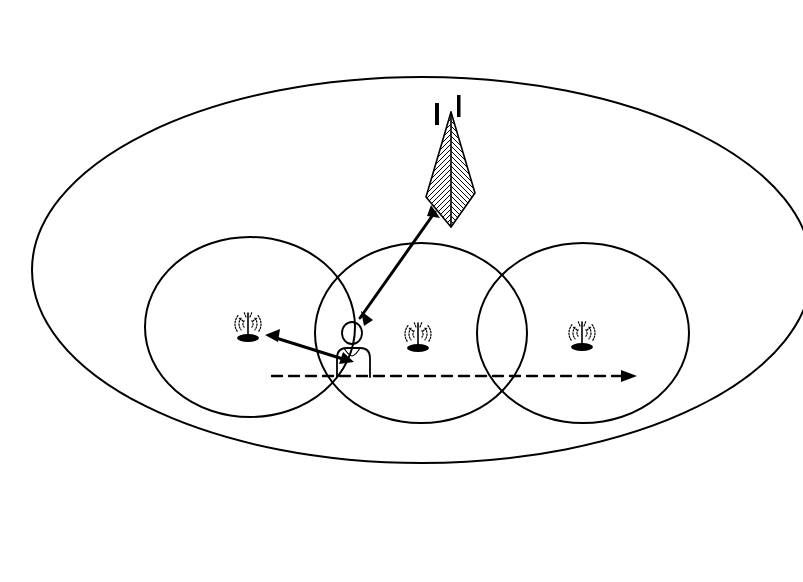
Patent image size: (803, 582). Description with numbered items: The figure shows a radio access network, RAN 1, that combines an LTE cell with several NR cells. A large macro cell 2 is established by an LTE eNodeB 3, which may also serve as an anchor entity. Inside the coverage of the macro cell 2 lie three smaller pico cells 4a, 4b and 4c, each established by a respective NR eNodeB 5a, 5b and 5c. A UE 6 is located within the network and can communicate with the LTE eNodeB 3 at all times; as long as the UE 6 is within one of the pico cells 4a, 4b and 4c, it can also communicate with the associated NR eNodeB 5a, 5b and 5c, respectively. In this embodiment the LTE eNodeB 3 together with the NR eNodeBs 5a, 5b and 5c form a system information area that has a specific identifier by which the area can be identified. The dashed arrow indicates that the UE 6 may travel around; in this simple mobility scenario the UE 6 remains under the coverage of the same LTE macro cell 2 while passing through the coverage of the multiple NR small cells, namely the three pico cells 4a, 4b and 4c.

The RAN 1 is at (536, 38).
The macro cell 2 is at (410, 77).
The LTE eNodeB 3 is at (460, 180).
The pico cell 4a is at (247, 237).
The pico cell 4b is at (472, 253).
The pico cell 4c is at (603, 244).
The NR eNodeB 5a is at (240, 313).
The NR eNodeB 5b is at (428, 320).
The NR eNodeB 5c is at (593, 325).
The UE 6 is at (345, 370).